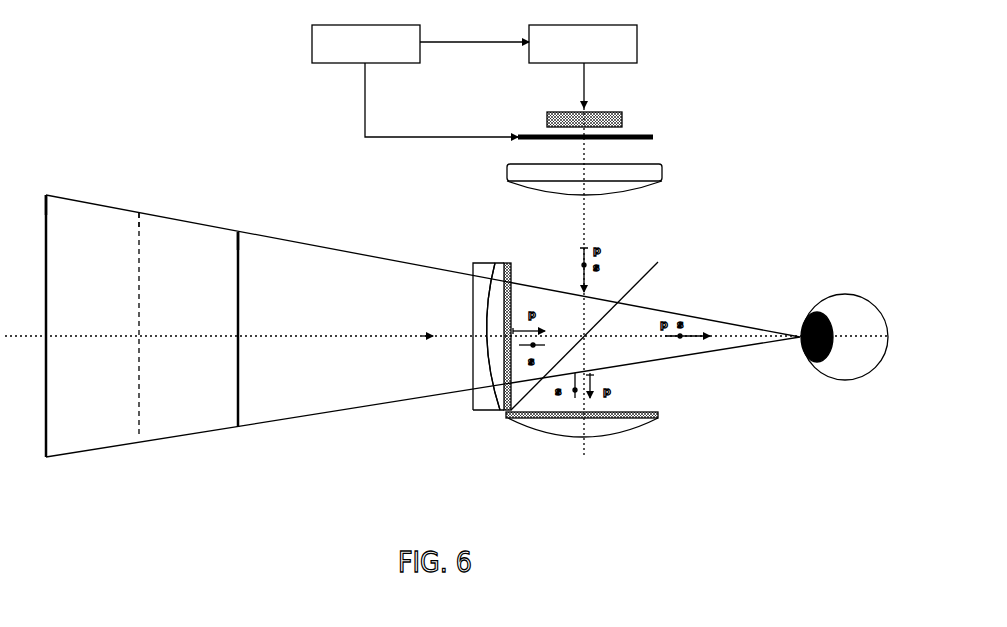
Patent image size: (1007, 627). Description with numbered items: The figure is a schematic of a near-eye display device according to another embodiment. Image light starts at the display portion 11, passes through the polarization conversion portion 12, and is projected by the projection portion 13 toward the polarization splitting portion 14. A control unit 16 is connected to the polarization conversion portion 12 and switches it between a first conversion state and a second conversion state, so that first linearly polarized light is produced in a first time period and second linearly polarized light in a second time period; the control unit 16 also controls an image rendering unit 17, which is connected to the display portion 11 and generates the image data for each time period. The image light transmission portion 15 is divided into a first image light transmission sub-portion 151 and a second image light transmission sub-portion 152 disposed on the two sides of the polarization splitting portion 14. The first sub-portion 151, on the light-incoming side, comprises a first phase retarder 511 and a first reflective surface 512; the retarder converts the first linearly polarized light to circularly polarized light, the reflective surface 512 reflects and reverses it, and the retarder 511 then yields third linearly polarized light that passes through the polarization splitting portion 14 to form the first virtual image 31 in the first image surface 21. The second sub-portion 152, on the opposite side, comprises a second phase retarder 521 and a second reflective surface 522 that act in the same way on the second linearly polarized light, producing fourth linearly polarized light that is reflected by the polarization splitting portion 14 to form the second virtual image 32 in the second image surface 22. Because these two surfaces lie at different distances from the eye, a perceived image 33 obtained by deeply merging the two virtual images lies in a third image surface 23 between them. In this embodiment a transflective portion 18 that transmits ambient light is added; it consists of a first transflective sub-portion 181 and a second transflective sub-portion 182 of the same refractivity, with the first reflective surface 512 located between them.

The display portion 11 is at (546, 115).
The polarization conversion portion 12 is at (656, 134).
The projection portion 13 is at (662, 179).
The polarization splitting portion 14 is at (642, 283).
The image light transmission portion 15 is at (621, 331).
The first image light transmission sub-portion 151 is at (557, 226).
The second image light transmission sub-portion 152 is at (689, 385).
The control unit 16 is at (420, 81).
The image rendering unit 17 is at (583, 66).
The transflective portion 18 is at (492, 283).
The first transflective sub-portion 181 is at (481, 303).
The second transflective sub-portion 182 is at (482, 277).
The first image surface 21 is at (240, 346).
The second image surface 22 is at (48, 337).
The third image surface 23 is at (146, 346).
The first virtual image 31 is at (237, 232).
The second virtual image 32 is at (44, 215).
The perceived image 33 is at (139, 215).
The first phase retarder 511 is at (511, 273).
The first reflective surface 512 is at (491, 287).
The second phase retarder 521 is at (648, 410).
The second reflective surface 522 is at (648, 421).